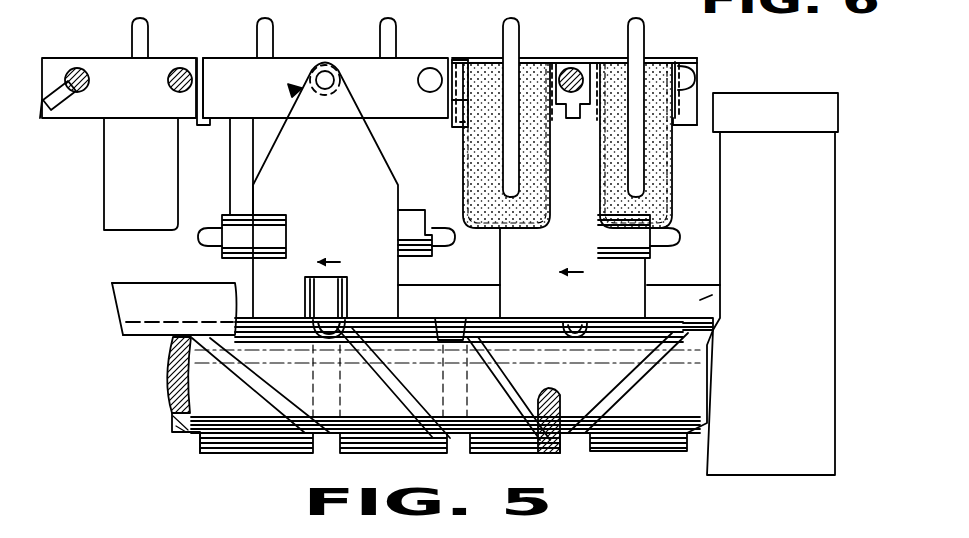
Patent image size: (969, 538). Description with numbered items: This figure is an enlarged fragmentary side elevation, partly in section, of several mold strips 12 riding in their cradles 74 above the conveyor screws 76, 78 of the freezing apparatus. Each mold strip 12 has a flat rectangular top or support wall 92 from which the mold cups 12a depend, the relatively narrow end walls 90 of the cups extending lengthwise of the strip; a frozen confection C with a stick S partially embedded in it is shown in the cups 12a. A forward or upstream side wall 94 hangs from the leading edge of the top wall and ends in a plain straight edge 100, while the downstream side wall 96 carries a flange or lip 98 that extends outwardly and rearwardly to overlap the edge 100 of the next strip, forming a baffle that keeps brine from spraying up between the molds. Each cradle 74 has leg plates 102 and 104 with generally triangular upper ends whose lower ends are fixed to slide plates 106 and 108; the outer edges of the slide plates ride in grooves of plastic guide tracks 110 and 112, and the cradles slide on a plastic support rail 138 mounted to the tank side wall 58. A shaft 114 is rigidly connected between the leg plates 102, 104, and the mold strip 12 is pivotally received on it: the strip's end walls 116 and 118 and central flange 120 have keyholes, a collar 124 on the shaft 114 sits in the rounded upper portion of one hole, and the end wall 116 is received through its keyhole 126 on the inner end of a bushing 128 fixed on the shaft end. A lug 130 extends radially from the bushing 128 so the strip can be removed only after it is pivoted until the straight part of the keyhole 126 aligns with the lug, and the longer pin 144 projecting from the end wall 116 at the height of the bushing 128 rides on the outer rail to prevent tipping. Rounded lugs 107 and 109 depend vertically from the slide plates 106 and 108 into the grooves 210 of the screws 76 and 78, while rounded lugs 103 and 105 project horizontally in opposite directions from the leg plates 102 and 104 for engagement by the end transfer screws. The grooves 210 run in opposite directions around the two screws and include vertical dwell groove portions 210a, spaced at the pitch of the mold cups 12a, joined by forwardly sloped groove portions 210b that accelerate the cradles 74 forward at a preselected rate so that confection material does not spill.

The mold strip 12 is at (117, 50).
The stick S is at (658, 32).
The shaft 114 is at (565, 67).
The end wall 116 is at (182, 38).
The pin 144 is at (417, 80).
The bushing 128 is at (84, 89).
The keyhole 126 is at (76, 112).
The lug 130 is at (44, 120).
The mold cup 12a is at (553, 242).
The flange 98 is at (702, 122).
The downstream side wall 96 is at (700, 76).
The top wall 92 is at (458, 62).
The straight edge 100 is at (459, 127).
The upstream side wall 94 is at (452, 100).
The end wall of mold cup 90 is at (670, 176).
The central flange 120 is at (587, 65).
The collar 124 is at (566, 50).
The end wall 118 is at (583, 121).
The frozen confection C is at (530, 211).
The leg plate 102 is at (343, 186).
The rounded lug 103 is at (200, 240).
The rounded lug 105 is at (735, 236).
The cradle 74 is at (406, 267).
The guide track 110 is at (120, 302).
The slide plate 106 is at (174, 309).
The rounded lug 107 is at (344, 327).
The dwell groove portion 210a is at (453, 323).
The leg plate 104 is at (525, 306).
The rounded lug 109 is at (586, 325).
The guide track 112 is at (712, 300).
The slide plate 108 is at (688, 319).
The support rail 138 is at (832, 93).
The tank side wall 58 is at (832, 302).
The indexing screw 76 is at (166, 375).
The indexing screw 78 is at (700, 398).
The sloped groove portion 210b is at (403, 442).
The groove 210 is at (707, 363).